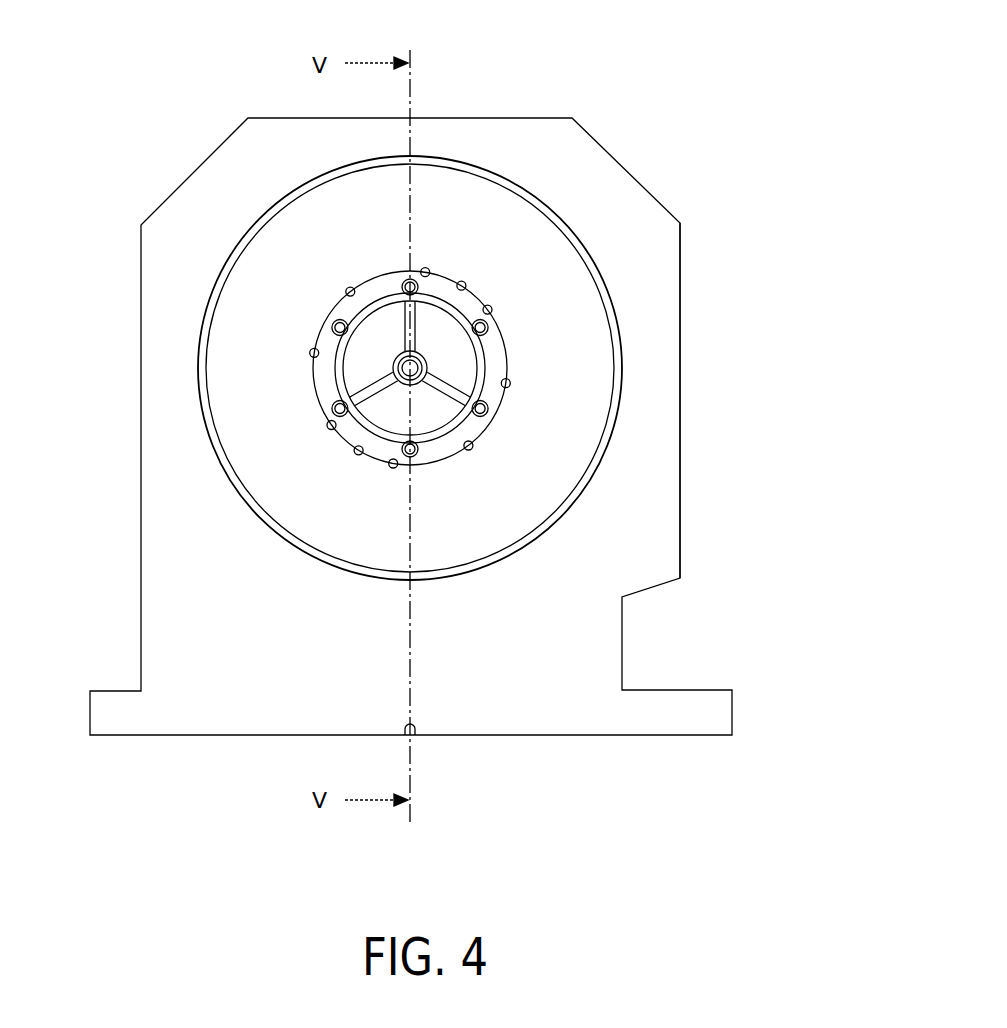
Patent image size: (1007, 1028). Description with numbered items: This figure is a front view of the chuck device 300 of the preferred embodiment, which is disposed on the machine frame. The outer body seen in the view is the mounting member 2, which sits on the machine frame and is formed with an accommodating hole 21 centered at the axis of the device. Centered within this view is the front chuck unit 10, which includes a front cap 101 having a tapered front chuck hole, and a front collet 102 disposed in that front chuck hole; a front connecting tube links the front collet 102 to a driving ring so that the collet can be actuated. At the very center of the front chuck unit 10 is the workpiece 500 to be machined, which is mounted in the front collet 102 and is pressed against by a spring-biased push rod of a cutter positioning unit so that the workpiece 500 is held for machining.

The chuck device 300 is at (617, 122).
The mounting member 2 is at (632, 168).
The accommodating hole 21 is at (645, 262).
The front chuck unit 10 is at (308, 414).
The front cap 101 is at (328, 382).
The front collet 102 is at (362, 358).
The workpiece 500 is at (428, 366).